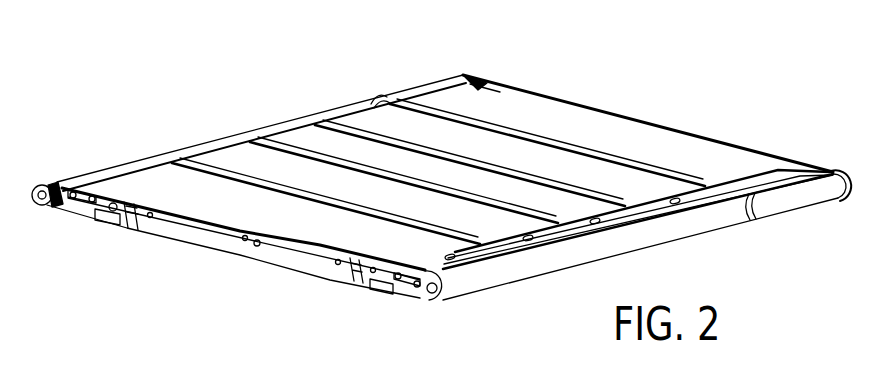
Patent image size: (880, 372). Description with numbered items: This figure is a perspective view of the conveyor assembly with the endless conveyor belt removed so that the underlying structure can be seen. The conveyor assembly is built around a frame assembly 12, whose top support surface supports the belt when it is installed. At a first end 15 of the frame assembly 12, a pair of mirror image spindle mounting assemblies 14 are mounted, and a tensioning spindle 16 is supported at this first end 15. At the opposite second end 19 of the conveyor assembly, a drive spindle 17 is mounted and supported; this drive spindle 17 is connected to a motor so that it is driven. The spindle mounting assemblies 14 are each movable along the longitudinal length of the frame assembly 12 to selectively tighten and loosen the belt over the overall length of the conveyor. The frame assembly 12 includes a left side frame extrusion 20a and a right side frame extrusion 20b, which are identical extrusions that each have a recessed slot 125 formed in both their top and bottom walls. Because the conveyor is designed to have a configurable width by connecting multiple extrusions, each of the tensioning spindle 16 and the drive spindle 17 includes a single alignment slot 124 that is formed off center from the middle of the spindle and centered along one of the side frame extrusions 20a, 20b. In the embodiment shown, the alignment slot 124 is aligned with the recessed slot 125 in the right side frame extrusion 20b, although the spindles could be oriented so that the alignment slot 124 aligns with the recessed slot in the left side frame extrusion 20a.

The frame assembly 12 is at (600, 120).
The spindle mounting assembly 14 is at (402, 292).
The first end 15 is at (818, 165).
The tensioning spindle 16 is at (800, 197).
The drive spindle 17 is at (106, 168).
The second end 19 is at (140, 177).
The side frame extrusion 20a is at (217, 157).
The side frame extrusion 20b is at (500, 97).
The alignment slot 124 is at (374, 98).
The recessed slot 125 is at (451, 119).